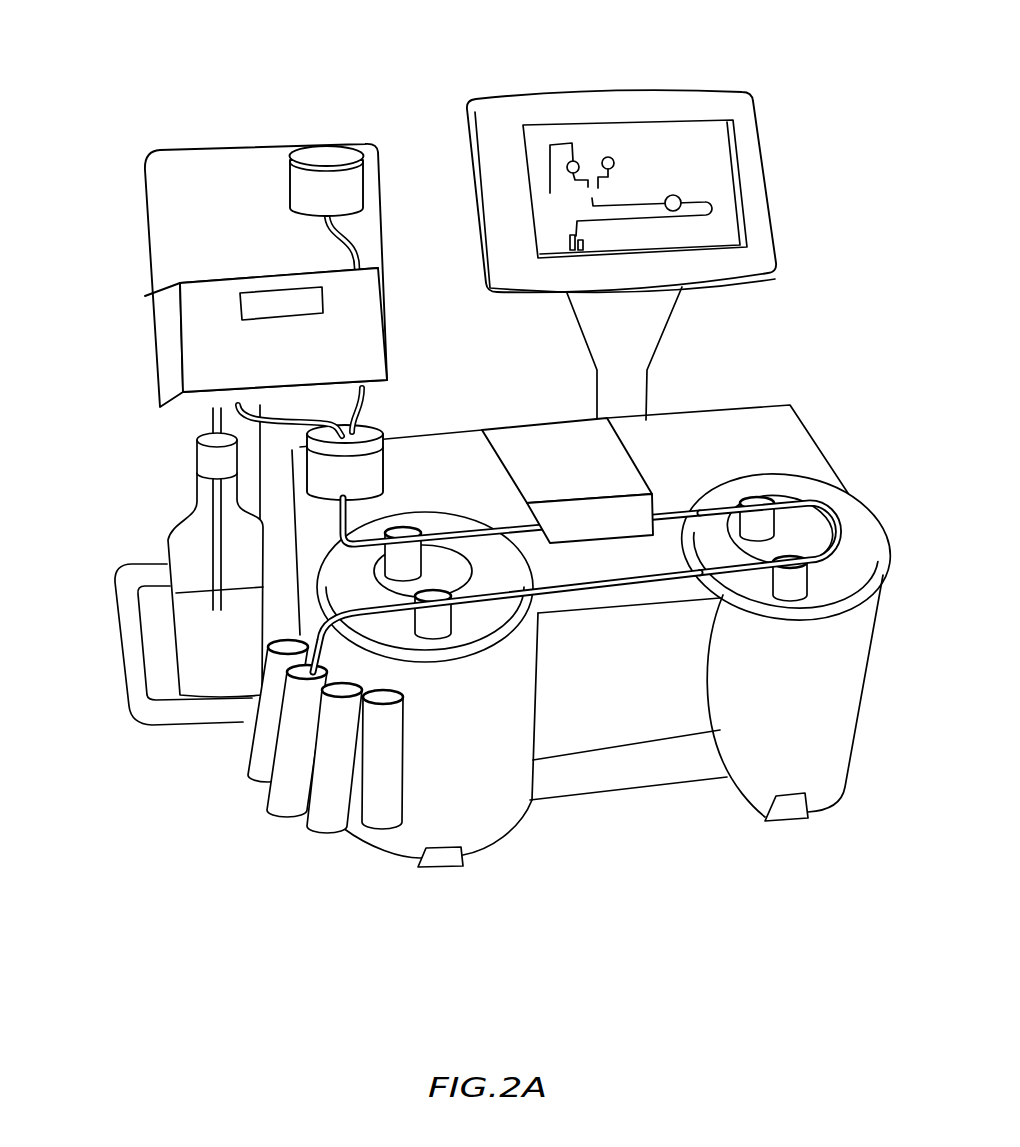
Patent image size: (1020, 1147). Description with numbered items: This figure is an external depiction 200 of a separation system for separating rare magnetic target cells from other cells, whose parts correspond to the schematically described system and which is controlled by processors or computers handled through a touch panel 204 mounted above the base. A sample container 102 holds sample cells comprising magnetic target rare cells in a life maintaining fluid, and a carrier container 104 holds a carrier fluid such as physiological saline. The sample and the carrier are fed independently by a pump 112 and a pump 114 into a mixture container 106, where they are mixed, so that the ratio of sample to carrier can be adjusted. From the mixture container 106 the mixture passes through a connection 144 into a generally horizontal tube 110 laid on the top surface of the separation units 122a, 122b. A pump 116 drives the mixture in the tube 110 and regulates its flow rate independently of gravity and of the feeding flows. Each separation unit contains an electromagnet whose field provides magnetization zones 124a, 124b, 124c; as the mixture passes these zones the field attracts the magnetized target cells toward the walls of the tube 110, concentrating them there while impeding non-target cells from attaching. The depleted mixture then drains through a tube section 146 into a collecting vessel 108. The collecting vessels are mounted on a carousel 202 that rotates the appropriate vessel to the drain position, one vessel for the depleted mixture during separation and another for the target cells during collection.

The external depiction of separation system 200 is at (499, 502).
The carousel 202 is at (600, 695).
The touch panel 204 is at (722, 178).
The sample container 102 is at (348, 192).
The carrier container 104 is at (190, 537).
The mixture container 106 is at (372, 430).
The collecting vessel 108 is at (282, 700).
The tube 110 is at (838, 520).
The pump 112 is at (163, 338).
The pump 114 is at (366, 327).
The pump 116 is at (616, 513).
The separation unit 122a is at (448, 643).
The separation unit 122b is at (757, 586).
The magnetization zone 124a is at (406, 528).
The magnetization zone 124b is at (450, 608).
The magnetization zone 124c is at (764, 497).
The connection 144 is at (338, 543).
The tube section 146 is at (309, 634).